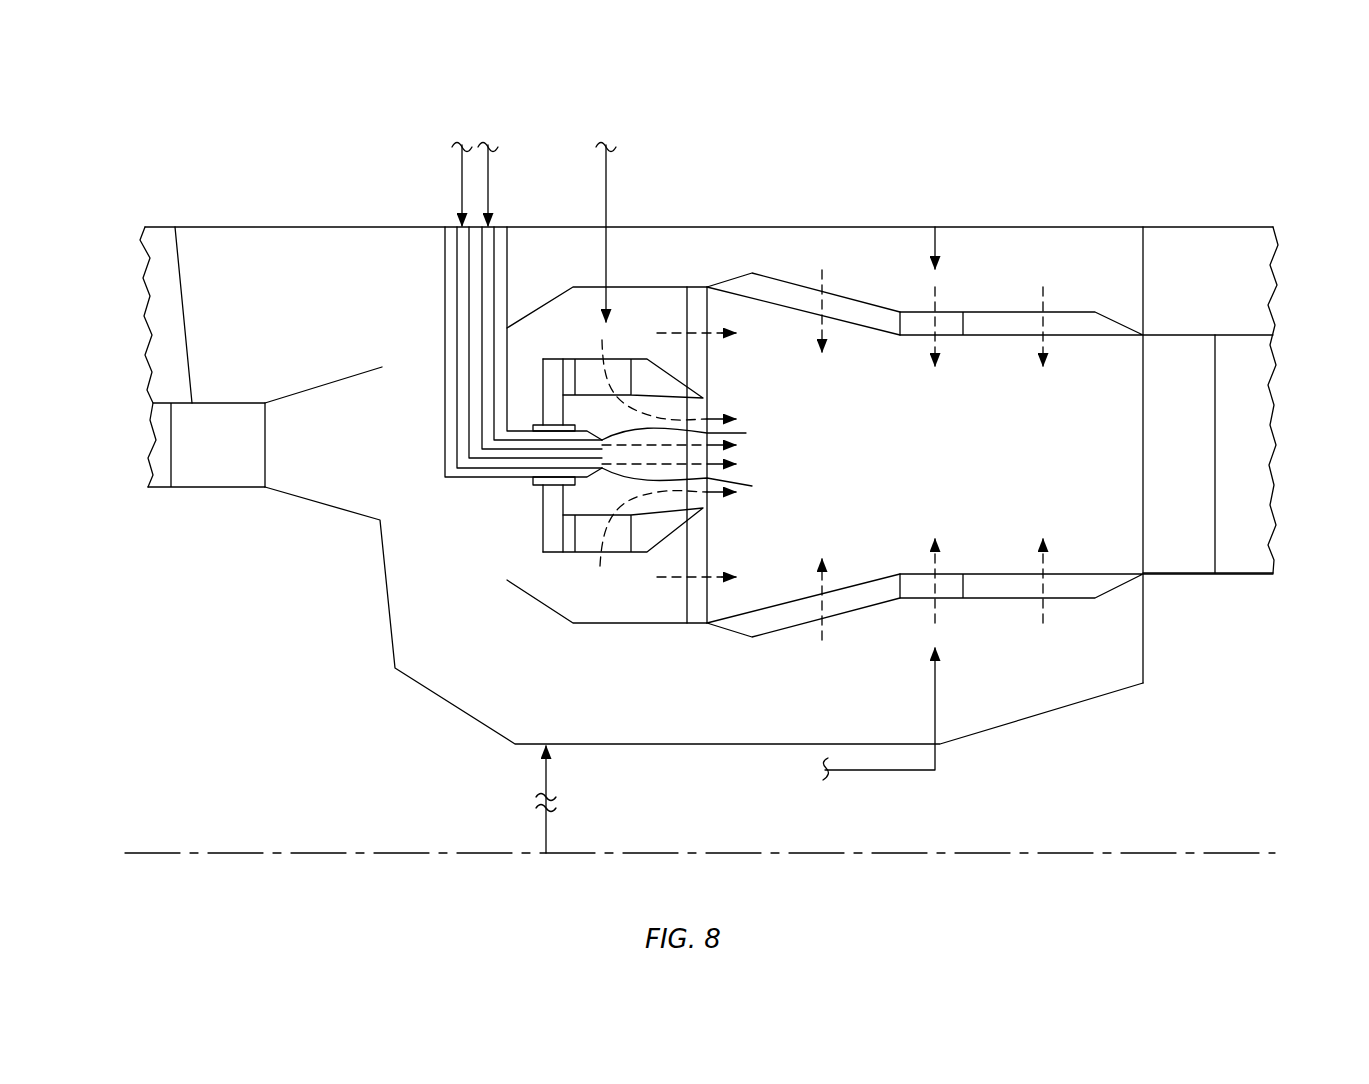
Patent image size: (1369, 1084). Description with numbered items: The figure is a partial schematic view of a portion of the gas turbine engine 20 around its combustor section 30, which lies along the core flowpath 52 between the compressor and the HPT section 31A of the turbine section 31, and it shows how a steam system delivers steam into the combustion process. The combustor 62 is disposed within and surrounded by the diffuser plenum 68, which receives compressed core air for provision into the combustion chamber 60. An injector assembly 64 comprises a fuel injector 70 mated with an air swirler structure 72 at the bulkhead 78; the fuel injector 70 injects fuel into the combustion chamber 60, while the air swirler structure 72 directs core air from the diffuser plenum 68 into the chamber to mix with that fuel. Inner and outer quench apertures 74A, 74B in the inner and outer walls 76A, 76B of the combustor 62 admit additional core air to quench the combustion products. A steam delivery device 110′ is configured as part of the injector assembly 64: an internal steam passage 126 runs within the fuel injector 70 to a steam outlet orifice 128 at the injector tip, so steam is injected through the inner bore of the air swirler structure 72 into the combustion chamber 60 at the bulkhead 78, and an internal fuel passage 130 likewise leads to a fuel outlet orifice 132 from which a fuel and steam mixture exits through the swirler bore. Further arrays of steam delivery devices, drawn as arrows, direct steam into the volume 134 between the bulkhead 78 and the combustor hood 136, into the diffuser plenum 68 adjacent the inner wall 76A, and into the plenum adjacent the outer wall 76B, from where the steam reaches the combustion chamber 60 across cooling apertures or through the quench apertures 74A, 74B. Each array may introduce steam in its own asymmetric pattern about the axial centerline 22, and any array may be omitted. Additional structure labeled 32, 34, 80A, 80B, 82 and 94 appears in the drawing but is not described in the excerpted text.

The gas turbine engine 20 is at (150, 120).
The axial centerline 22 is at (128, 852).
The combustor section 30 is at (1044, 183).
The turbine section 31 is at (1236, 337).
The HPT section 31A is at (1259, 183).
The outer casing 32 is at (711, 435).
The outer casing structure 34 is at (314, 213).
The core flowpath 52 is at (157, 477).
The combustion chamber 60 is at (949, 462).
The combustor 62 is at (1091, 283).
The injector assembly 64 is at (450, 509).
The diffuser plenum 68 is at (304, 333).
The fuel injector 70 is at (410, 455).
The air swirler structure 72 is at (674, 371).
The inner quench apertures 74A is at (950, 591).
The outer quench apertures 74B is at (953, 318).
The inner wall 76A is at (850, 618).
The outer wall 76B is at (852, 287).
The bulkhead 78 is at (679, 600).
The inner turbine inlet wall 80A is at (1188, 575).
The outer turbine inlet wall 80B is at (1206, 335).
The turbine inlet 82 is at (1226, 362).
The turbine vane 94 is at (1218, 466).
The steam delivery device 110′ is at (505, 486).
The internal steam passage 126 is at (498, 281).
The steam outlet orifice 128 is at (701, 436).
The internal fuel passage 130 is at (459, 269).
The fuel outlet orifice 132 is at (703, 482).
The volume 134 is at (582, 345).
The combustor hood 136 is at (630, 286).